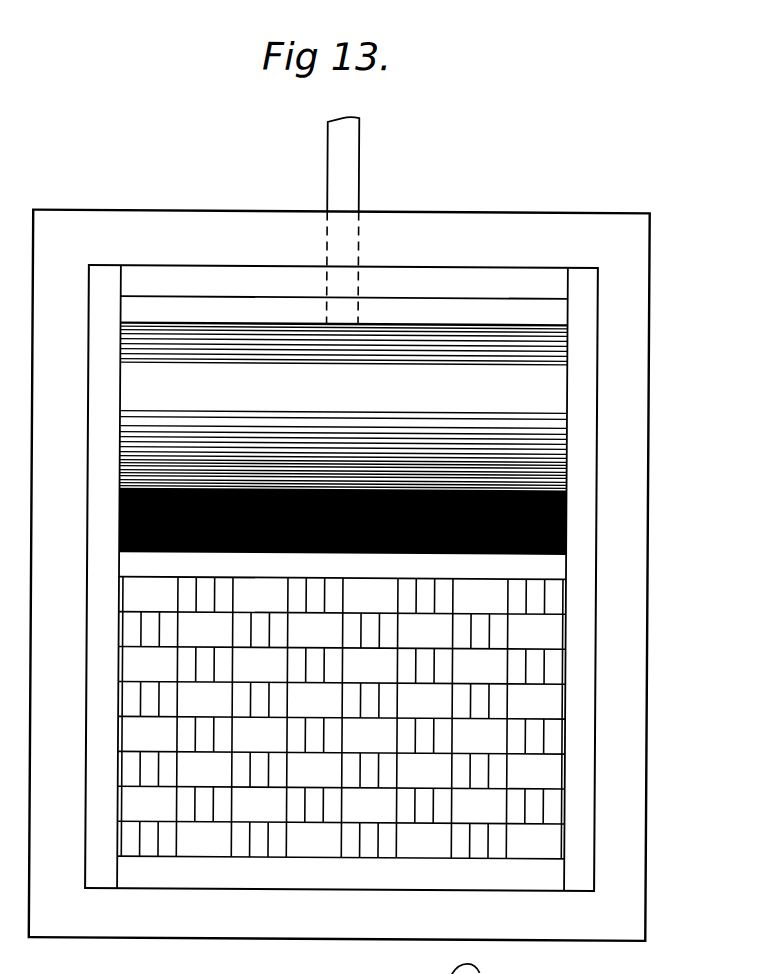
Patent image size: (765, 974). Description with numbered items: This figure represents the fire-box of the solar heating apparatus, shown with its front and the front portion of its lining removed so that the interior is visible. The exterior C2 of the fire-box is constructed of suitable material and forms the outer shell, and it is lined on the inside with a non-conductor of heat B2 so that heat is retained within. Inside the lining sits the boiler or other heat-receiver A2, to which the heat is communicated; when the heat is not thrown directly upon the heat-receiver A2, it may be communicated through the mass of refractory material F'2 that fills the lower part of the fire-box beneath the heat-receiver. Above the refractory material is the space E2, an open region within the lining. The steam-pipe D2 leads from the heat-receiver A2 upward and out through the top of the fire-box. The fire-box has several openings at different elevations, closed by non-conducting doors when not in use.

The steam-pipe D2 is at (361, 220).
The exterior of the fire-box C2 is at (339, 575).
The non-conductor of heat B2 is at (341, 578).
The space above the refractory material E2 is at (343, 438).
The boiler or heat-receiver A2 is at (343, 439).
The refractory material F'2 is at (341, 718).